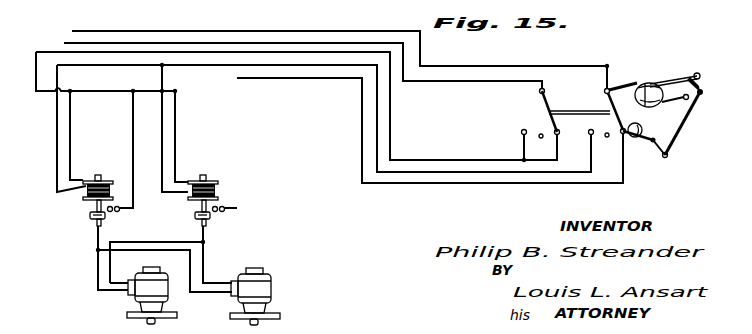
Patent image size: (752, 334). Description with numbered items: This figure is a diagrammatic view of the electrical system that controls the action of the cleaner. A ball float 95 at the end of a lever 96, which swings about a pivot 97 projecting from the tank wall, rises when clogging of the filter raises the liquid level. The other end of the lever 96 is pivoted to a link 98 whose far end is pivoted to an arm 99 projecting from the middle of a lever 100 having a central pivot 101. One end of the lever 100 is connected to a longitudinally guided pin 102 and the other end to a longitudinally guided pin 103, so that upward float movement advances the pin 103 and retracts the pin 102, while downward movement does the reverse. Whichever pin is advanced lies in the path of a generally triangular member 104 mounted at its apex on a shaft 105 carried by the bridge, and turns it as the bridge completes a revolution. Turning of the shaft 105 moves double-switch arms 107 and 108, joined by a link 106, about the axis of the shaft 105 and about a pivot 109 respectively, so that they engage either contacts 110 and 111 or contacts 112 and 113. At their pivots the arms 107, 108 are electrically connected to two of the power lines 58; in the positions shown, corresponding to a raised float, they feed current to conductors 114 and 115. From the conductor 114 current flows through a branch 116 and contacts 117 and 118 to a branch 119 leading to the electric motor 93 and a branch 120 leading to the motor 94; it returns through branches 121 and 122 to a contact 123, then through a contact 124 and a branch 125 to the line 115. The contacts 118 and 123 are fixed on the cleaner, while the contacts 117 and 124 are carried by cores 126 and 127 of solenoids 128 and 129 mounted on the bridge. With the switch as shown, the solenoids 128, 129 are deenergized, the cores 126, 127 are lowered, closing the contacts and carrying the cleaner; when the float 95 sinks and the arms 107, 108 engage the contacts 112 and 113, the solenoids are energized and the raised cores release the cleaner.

The power lines 58 is at (194, 43).
The conductor 115 is at (270, 52).
The conductor 114 is at (458, 185).
The branch 116 is at (132, 118).
The solenoid 128 is at (118, 183).
The core 126 is at (97, 176).
The core 127 is at (203, 175).
The contact 117 is at (90, 212).
The contact 118 is at (90, 220).
The branch 125 is at (238, 143).
The solenoid 129 is at (218, 190).
The contact 124 is at (198, 215).
The contact 123 is at (207, 226).
The branch 121 is at (140, 242).
The branch 120 is at (150, 245).
The branch 119 is at (98, 268).
The branch 122 is at (203, 268).
The electric motor 93 is at (145, 288).
The motor 94 is at (262, 292).
The pivot 109 is at (539, 92).
The switch arm 108 is at (548, 107).
The contact 111 is at (562, 143).
The contact 113 is at (521, 132).
The contact 112 is at (589, 131).
The contact 110 is at (621, 134).
The link 106 is at (580, 110).
The switch arm 107 is at (604, 89).
The shaft 105 is at (612, 80).
The triangular member 104 is at (638, 95).
The lever 100 is at (662, 82).
The pin 102 is at (673, 78).
The central pivot 101 is at (680, 80).
The arm 99 is at (703, 88).
The pin 103 is at (670, 106).
The link 98 is at (680, 133).
The ball float 95 is at (634, 138).
The lever 96 is at (656, 147).
The pivot 97 is at (651, 144).